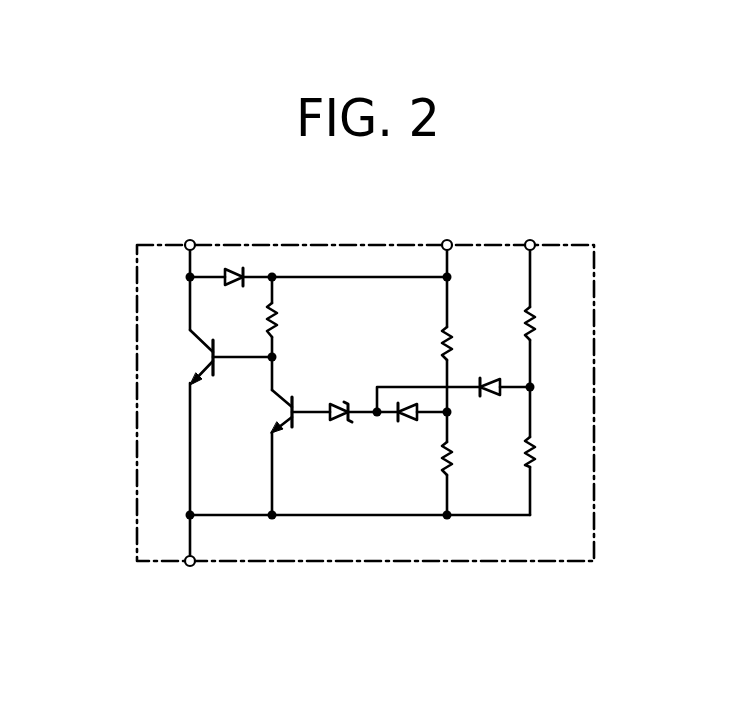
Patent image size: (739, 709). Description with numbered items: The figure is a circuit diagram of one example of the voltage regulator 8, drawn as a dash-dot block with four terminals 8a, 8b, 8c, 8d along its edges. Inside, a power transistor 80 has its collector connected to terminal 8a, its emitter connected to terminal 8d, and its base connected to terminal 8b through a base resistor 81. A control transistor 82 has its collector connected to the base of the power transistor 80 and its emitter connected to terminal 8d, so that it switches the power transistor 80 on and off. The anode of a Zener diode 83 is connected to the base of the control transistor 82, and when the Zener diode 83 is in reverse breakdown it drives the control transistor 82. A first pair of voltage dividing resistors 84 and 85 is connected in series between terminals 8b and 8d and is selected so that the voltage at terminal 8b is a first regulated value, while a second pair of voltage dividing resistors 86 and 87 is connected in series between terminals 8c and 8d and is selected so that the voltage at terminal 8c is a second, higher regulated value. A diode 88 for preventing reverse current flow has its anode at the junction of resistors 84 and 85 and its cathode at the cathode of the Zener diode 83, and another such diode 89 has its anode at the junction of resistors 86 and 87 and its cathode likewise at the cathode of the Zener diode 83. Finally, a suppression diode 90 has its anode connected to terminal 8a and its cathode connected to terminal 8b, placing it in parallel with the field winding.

The voltage regulator 8 is at (346, 249).
The terminal 8a is at (194, 241).
The terminal 8b is at (452, 243).
The terminal 8c is at (536, 243).
The terminal 8d is at (189, 567).
The power transistor 80 is at (198, 351).
The base resistor 81 is at (278, 320).
The control transistor 82 is at (278, 412).
The Zener diode 83 is at (336, 426).
The first voltage dividing resistor 84 is at (455, 337).
The first voltage dividing resistor 85 is at (457, 455).
The second voltage dividing resistor 86 is at (552, 307).
The second voltage dividing resistor 87 is at (545, 455).
The diode for preventing reverse current flow 88 is at (405, 425).
The diode for preventing reverse current flow 89 is at (487, 398).
The suppression diode 90 is at (246, 263).